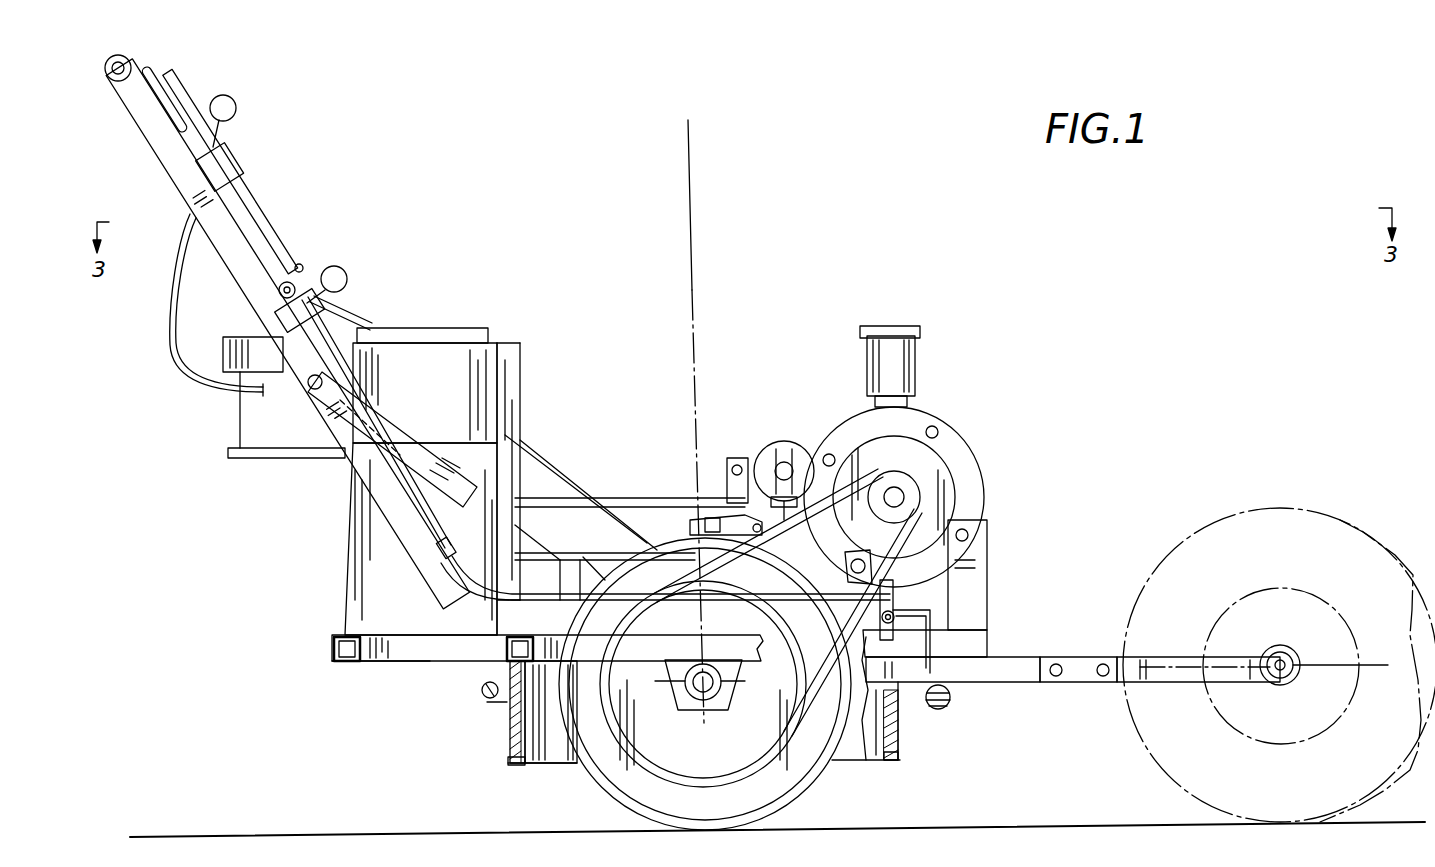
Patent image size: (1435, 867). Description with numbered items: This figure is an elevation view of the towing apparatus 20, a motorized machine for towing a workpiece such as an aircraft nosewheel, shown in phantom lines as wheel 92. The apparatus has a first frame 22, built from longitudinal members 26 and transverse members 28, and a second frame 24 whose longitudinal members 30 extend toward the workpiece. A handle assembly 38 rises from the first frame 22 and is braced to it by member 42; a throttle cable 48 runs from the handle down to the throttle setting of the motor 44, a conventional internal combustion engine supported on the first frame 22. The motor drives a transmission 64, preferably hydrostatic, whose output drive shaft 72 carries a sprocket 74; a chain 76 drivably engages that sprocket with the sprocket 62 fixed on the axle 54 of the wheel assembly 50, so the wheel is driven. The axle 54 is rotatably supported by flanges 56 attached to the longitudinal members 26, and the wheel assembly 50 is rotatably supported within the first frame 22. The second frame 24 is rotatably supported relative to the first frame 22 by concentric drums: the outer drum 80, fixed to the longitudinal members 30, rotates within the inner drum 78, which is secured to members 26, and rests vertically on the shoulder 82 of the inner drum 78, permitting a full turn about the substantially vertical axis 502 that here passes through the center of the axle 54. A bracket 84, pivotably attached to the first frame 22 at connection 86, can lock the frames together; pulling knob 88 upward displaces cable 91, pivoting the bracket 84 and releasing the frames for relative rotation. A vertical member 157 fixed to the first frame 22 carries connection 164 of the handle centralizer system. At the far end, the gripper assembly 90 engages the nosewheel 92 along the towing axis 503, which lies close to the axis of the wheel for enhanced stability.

The towing apparatus 20 is at (925, 276).
The first frame 22 is at (420, 668).
The second frame 24 is at (1028, 697).
The longitudinal members 26 is at (385, 666).
The transverse members 28 is at (508, 648).
The longitudinal members 30 is at (995, 668).
The handle assembly 38 is at (196, 90).
The member 42 is at (393, 442).
The motor 44 is at (490, 372).
The cable 48 is at (190, 368).
The wheel assembly 50 is at (665, 430).
The axle 54 is at (698, 692).
The flanges 56 is at (727, 668).
The sprocket 62 is at (630, 752).
The transmission 64 is at (953, 443).
The drive shaft 72 is at (900, 497).
The sprocket 74 is at (888, 487).
The chain 76 is at (762, 462).
The inner drum 78 is at (510, 757).
The outer drum 80 is at (508, 716).
The shoulder 82 is at (505, 738).
The bracket 84 is at (930, 627).
The connection 86 is at (897, 603).
The knob 88 is at (338, 266).
The gripper assembly 90 is at (1115, 645).
The cable 91 is at (920, 537).
The wheel 92 is at (1212, 530).
The vertical member 157 is at (728, 480).
The connection 164 is at (797, 452).
The axis 502 is at (690, 142).
The axis 503 is at (1377, 665).